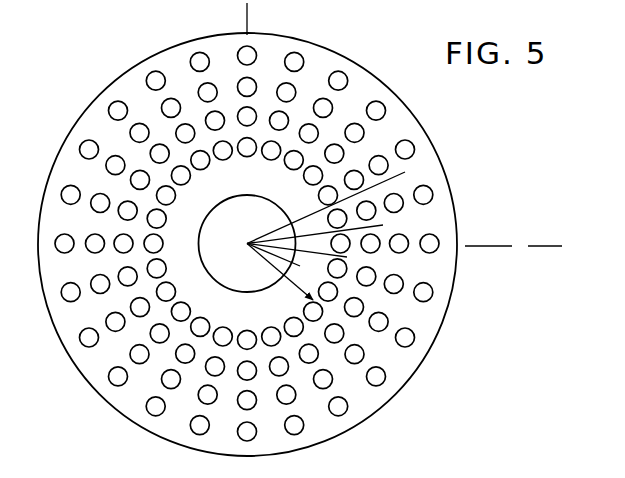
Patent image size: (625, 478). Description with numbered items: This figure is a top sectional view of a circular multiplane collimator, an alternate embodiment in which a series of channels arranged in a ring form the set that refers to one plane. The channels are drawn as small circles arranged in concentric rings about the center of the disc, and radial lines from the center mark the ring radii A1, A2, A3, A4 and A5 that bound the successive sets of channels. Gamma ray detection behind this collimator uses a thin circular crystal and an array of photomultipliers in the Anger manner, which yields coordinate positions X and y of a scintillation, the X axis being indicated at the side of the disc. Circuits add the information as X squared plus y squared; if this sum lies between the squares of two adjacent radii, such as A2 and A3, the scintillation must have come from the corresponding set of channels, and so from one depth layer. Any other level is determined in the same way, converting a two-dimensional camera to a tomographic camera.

The ring radius A1 is at (439, 160).
The ring radius A2 is at (425, 219).
The ring radius A3 is at (390, 262).
The ring radius A4 is at (354, 289).
The ring radius A5 is at (280, 272).
The coordinate position X is at (513, 246).